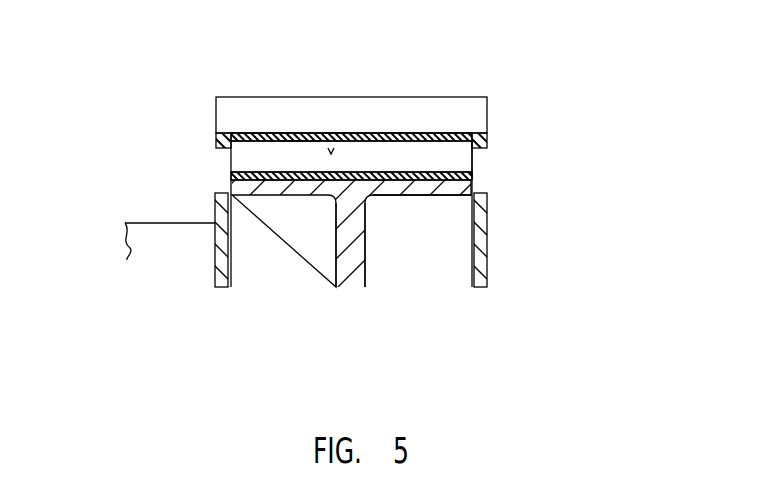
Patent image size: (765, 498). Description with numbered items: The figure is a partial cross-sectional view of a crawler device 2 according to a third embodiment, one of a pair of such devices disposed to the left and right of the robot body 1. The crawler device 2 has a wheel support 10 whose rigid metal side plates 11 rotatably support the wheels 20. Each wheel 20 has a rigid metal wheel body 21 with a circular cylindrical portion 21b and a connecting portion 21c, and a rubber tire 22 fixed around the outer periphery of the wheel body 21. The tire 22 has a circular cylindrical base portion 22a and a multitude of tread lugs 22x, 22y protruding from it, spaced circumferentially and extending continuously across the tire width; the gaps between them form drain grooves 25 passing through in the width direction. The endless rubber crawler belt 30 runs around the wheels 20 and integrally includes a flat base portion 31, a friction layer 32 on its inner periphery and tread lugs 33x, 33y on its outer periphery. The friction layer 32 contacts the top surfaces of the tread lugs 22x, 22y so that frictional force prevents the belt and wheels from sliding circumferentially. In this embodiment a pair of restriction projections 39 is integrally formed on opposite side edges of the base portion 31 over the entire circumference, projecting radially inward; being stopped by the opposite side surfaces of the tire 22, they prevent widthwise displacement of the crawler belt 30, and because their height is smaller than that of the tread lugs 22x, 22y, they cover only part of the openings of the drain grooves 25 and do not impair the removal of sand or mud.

The body 1 is at (160, 223).
The crawler device 2 is at (499, 178).
The wheel support 10 is at (488, 230).
The side plate 11 is at (378, 245).
The wheel 20 is at (442, 275).
The wheel body 21 is at (367, 263).
The circular cylindrical portion 21b is at (408, 196).
The connecting portion 21c is at (336, 246).
The tire 22 is at (230, 172).
The base portion 22a is at (272, 171).
The tread lug 22x is at (279, 121).
The tread lug 22y is at (279, 121).
The drain groove 25 is at (297, 153).
The crawler belt 30 is at (489, 103).
The base portion 31 is at (378, 133).
The friction layer 32 is at (331, 152).
The tread lug 33x is at (442, 115).
The tread lug 33y is at (377, 78).
The restriction projection 39 is at (215, 142).